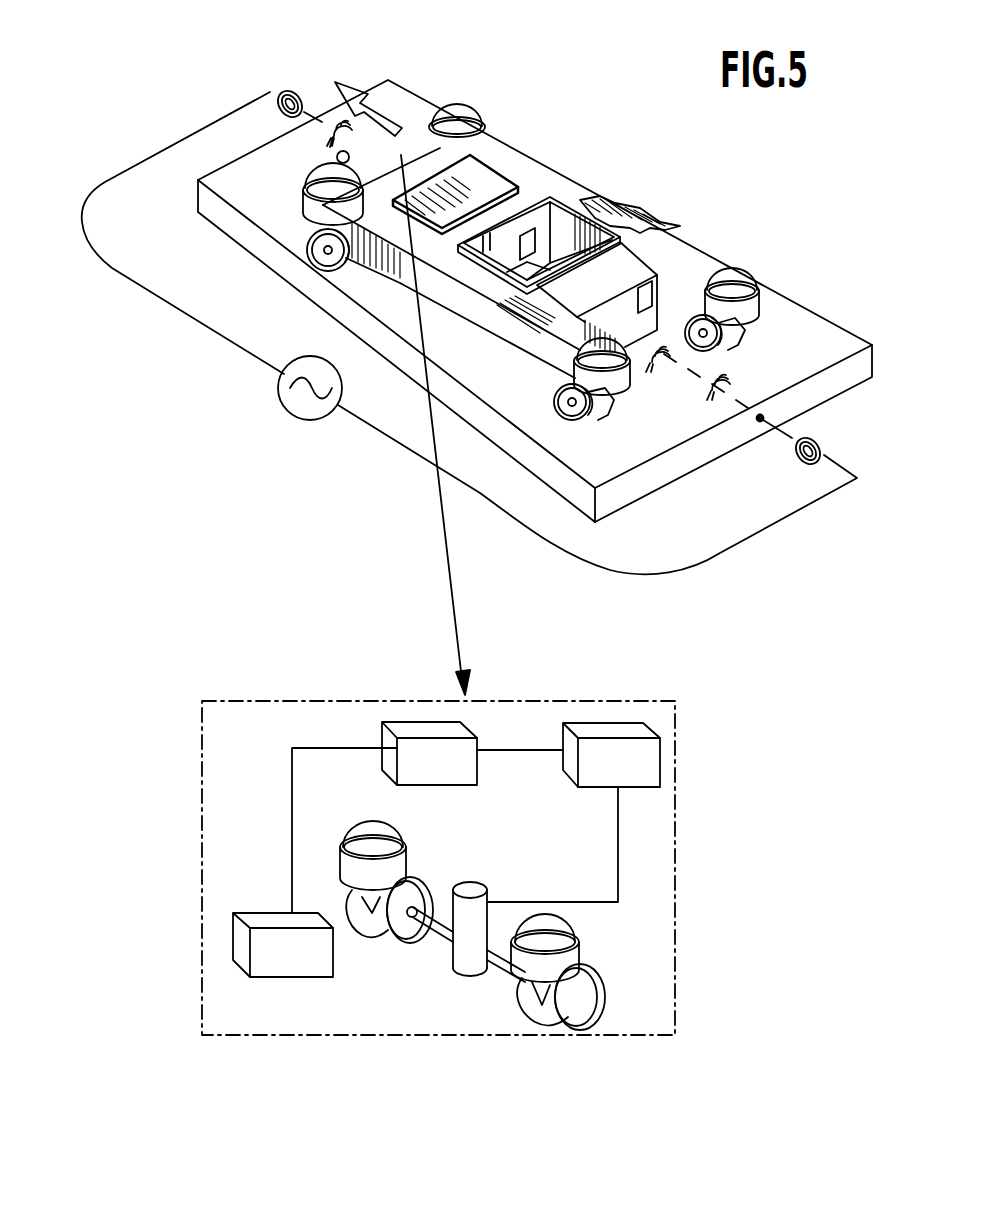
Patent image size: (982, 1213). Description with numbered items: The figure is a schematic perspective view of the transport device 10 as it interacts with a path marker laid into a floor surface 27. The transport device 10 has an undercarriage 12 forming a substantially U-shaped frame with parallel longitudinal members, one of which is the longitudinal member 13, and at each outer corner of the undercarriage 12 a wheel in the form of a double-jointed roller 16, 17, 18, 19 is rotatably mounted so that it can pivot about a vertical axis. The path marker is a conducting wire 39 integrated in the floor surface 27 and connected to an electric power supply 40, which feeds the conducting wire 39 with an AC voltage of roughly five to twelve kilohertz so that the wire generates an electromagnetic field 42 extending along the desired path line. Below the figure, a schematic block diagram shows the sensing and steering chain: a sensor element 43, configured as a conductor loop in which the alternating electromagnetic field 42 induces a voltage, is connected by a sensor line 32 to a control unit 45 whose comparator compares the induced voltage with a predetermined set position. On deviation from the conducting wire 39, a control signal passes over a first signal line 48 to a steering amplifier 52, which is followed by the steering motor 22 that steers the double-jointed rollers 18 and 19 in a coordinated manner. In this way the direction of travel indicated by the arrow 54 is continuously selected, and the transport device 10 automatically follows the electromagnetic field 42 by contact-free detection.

The transport device 10 is at (557, 143).
The undercarriage 12 is at (604, 192).
The longitudinal member 13 is at (516, 327).
The double-jointed roller 16 is at (568, 418).
The double-jointed roller 17 is at (698, 362).
The double-jointed roller 18 is at (327, 270).
The double-jointed roller 19 is at (432, 880).
The steering motor 22 is at (460, 953).
The floor surface 27 is at (680, 438).
The sensor line 32 is at (292, 812).
The conducting wire 39 is at (270, 93).
The electric power supply 40 is at (296, 406).
The electromagnetic field 42 is at (302, 96).
The sensor element 43 is at (292, 960).
The control unit 45 is at (418, 750).
The first signal line 48 is at (523, 748).
The steering amplifier 52 is at (620, 752).
The arrow 54 is at (400, 102).